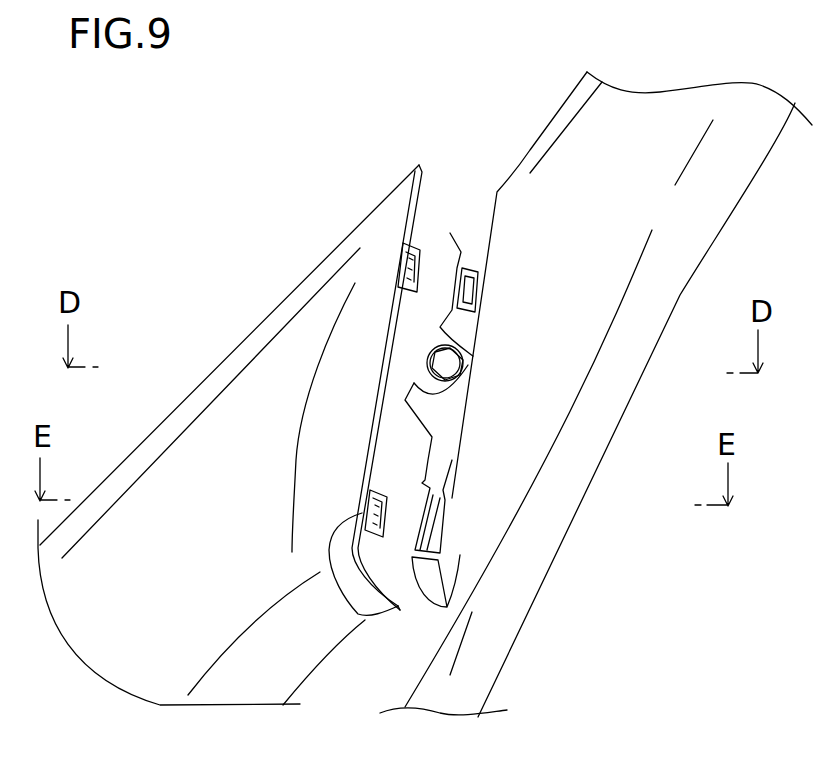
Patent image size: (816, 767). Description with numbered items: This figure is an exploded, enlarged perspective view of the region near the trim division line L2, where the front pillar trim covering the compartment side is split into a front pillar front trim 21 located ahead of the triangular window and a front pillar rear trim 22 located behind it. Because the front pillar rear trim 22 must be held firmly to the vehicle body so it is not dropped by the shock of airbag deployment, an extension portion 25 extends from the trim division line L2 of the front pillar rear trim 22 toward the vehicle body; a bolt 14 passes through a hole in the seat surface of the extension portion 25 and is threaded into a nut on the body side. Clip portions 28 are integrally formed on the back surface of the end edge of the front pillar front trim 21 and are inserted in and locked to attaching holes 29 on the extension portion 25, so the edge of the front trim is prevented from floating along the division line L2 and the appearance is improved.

The bolt 14 is at (445, 363).
The front pillar front trim 21 is at (248, 352).
The front pillar rear trim 22 is at (541, 137).
The extension portion 25 is at (442, 430).
The clip portions 28 is at (418, 248).
The attaching holes 29 is at (450, 233).
The trim division line L2 is at (495, 91).